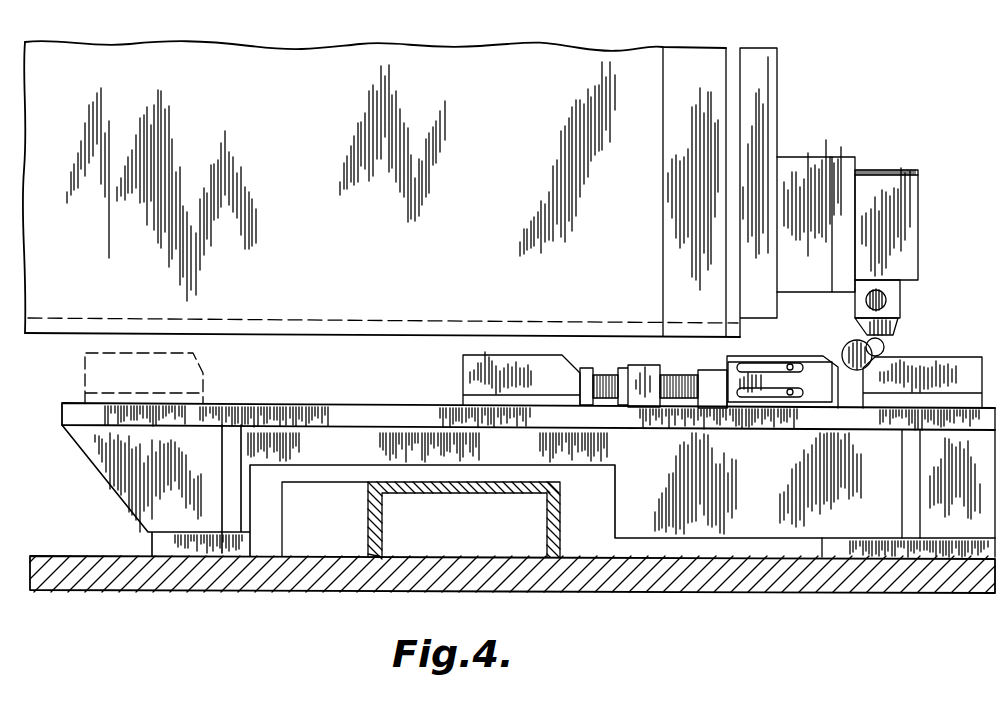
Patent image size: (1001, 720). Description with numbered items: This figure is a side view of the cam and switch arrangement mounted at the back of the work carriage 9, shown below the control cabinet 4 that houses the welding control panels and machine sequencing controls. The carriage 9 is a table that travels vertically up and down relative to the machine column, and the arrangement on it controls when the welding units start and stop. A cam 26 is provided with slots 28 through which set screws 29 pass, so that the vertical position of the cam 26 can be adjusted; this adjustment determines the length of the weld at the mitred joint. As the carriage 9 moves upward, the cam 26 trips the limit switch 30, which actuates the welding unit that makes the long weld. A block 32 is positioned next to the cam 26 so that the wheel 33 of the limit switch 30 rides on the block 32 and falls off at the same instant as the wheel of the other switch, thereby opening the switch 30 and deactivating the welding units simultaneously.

The control cabinet 4 is at (520, 64).
The work carriage 9 is at (639, 586).
The cam 26 is at (764, 364).
The slots 28 is at (777, 391).
The set screws 29 is at (801, 390).
The limit switch 30 is at (913, 242).
The block 32 is at (710, 373).
The wheel 33 is at (856, 342).